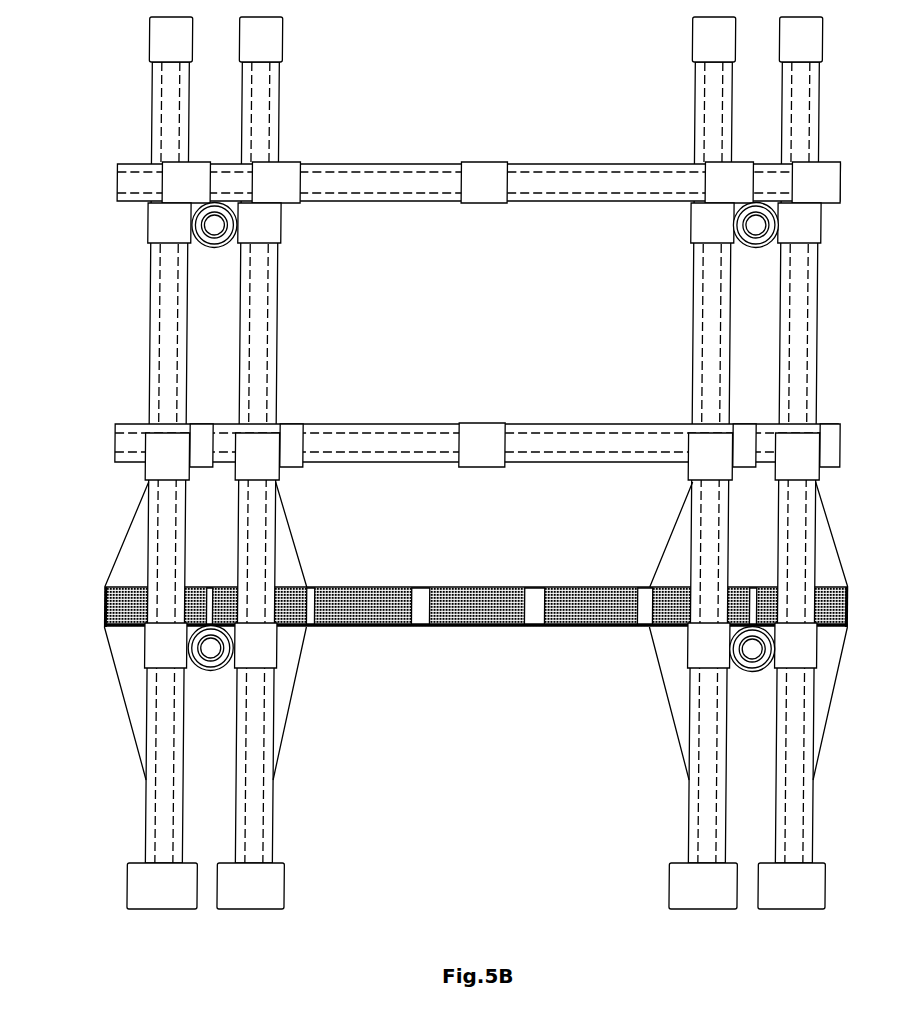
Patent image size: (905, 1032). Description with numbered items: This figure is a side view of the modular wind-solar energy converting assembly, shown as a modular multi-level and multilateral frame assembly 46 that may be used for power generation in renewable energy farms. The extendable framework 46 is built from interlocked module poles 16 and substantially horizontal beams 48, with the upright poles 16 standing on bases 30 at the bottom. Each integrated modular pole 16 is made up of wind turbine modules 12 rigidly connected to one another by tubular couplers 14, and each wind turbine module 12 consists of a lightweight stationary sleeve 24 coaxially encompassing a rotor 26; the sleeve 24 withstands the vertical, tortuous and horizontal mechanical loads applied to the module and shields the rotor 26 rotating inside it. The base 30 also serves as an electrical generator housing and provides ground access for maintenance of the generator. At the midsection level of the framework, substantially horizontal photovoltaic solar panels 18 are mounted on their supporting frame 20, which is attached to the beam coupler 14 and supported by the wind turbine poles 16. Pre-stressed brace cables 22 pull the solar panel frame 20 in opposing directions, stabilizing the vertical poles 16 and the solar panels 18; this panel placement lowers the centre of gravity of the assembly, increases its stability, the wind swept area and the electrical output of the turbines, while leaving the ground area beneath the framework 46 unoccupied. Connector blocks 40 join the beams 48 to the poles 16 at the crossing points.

The wind turbine module 12 is at (550, 435).
The tubular coupler 14 is at (817, 49).
The integrated modular pole 16 is at (146, 341).
The photovoltaic solar panels 18 is at (380, 587).
The solar panel supporting frame 20 is at (537, 587).
The pre-stressed brace cables 22 is at (293, 538).
The stationary sleeve 24 is at (270, 355).
The rotor 26 is at (258, 322).
The base 30 is at (283, 882).
The connector block 40 is at (707, 204).
The modular multi-level and multilateral frame assembly 46 is at (395, 107).
The substantially horizontal beams 48 is at (743, 245).